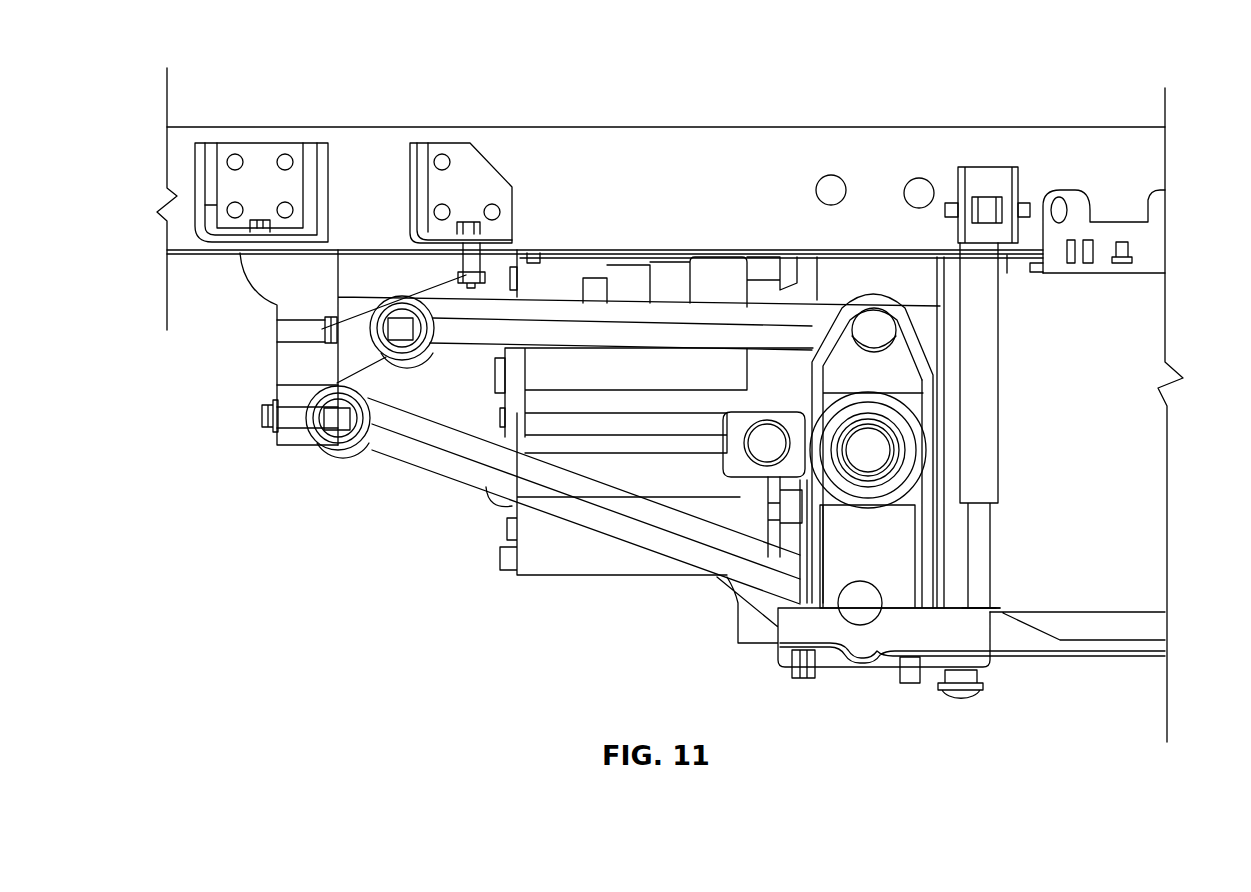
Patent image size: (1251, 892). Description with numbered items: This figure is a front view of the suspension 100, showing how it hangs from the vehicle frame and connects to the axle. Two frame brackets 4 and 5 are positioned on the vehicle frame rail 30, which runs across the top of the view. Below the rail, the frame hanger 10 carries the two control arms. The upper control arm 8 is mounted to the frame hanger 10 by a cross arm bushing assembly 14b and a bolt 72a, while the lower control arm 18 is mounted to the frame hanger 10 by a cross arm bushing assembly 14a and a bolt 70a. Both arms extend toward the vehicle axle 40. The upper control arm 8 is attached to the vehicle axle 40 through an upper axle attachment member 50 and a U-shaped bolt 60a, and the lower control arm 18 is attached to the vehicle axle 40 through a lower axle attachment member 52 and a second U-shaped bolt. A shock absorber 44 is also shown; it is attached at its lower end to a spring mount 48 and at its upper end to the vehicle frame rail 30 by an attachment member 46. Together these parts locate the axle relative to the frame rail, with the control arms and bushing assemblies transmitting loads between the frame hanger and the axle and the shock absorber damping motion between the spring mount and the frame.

The suspension 100 is at (816, 101).
The vehicle frame rail 30 is at (373, 150).
The frame bracket 5 is at (258, 157).
The frame bracket 4 is at (470, 172).
The attachment member 46 is at (990, 183).
The shock absorber 44 is at (982, 390).
The frame hanger 10 is at (250, 313).
The bolt 72a is at (320, 328).
The bolt 70a is at (263, 417).
The cross arm bushing assembly 14b is at (423, 367).
The cross arm bushing assembly 14a is at (337, 460).
The upper control arm 8 is at (548, 305).
The lower control arm 18 is at (417, 455).
The lower axle attachment member 52 is at (833, 547).
The spring mount 48 is at (1037, 637).
The U-shaped bolt 60a is at (912, 337).
The upper axle attachment member 50 is at (850, 372).
The vehicle axle 40 is at (868, 452).